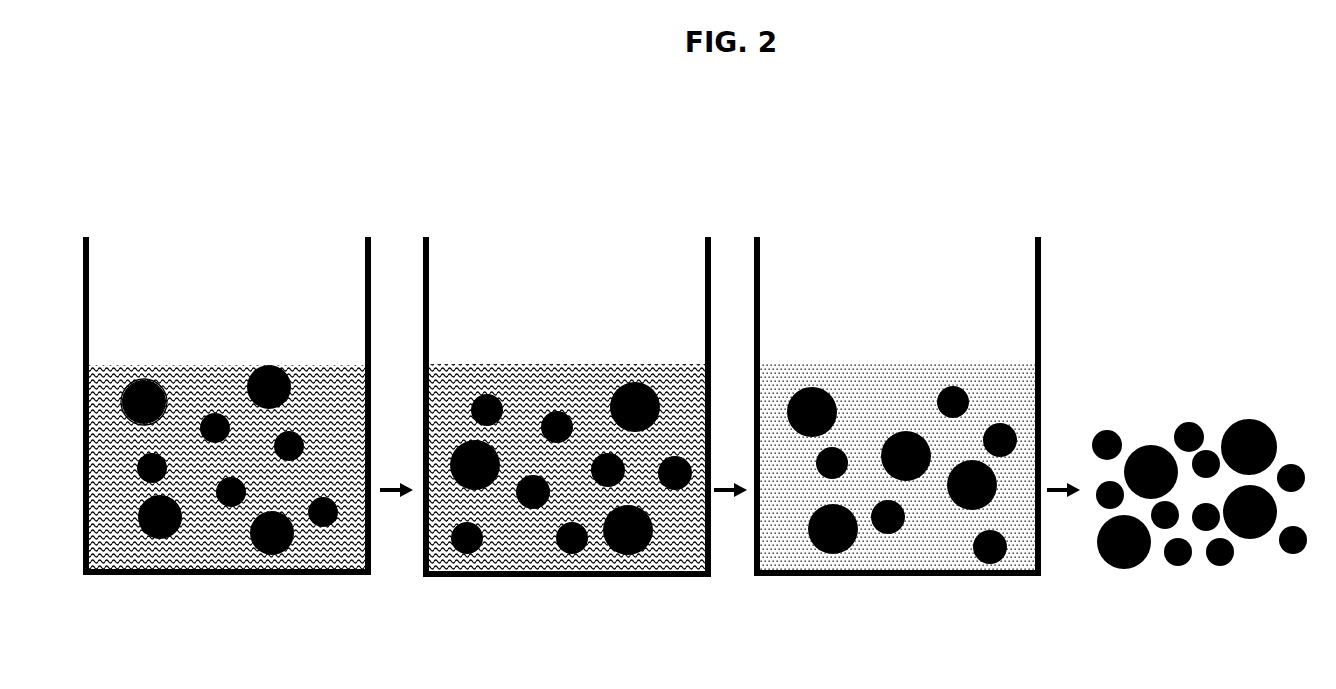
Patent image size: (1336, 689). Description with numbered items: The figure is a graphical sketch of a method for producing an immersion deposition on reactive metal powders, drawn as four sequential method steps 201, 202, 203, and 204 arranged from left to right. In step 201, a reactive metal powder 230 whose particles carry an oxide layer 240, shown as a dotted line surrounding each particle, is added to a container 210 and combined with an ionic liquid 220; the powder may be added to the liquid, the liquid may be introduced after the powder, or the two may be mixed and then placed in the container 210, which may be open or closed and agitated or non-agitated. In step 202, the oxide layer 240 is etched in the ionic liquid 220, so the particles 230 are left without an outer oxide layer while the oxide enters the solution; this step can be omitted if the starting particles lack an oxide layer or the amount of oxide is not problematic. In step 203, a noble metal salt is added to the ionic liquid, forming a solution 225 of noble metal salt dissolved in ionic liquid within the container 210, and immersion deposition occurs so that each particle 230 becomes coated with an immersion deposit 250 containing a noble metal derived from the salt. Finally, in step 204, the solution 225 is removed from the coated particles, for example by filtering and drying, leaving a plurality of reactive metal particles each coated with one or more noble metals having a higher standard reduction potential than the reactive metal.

The first method step 201 is at (202, 184).
The second method step 202 is at (550, 184).
The third method step 203 is at (873, 184).
The fourth method step 204 is at (1170, 184).
The container 210 is at (123, 575).
The ionic liquid 220 is at (232, 572).
The solution of noble metal salt 225 is at (923, 540).
The reactive metal powder 230 is at (143, 389).
The oxide layer 240 is at (170, 381).
The immersion deposit 250 is at (836, 388).